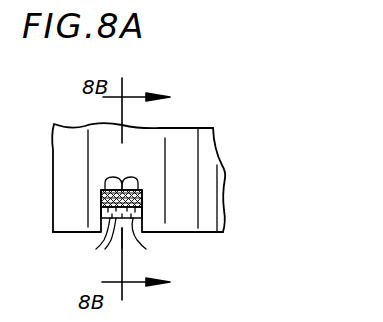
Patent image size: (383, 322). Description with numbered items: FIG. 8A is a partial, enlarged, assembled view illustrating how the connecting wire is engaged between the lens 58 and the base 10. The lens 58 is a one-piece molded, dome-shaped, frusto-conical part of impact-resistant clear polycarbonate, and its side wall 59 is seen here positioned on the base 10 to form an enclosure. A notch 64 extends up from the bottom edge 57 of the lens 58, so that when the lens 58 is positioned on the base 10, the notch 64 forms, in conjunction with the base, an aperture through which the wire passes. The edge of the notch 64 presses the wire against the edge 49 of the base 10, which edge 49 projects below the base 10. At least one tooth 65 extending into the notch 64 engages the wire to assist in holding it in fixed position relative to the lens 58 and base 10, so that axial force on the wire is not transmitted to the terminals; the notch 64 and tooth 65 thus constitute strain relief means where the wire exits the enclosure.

The base 10 is at (115, 233).
The edge of base 49 is at (103, 246).
The bottom edge 57 is at (215, 232).
The lens 58 is at (225, 176).
The side wall 59 is at (172, 140).
The notch 64 is at (136, 233).
The tooth 65 is at (122, 179).